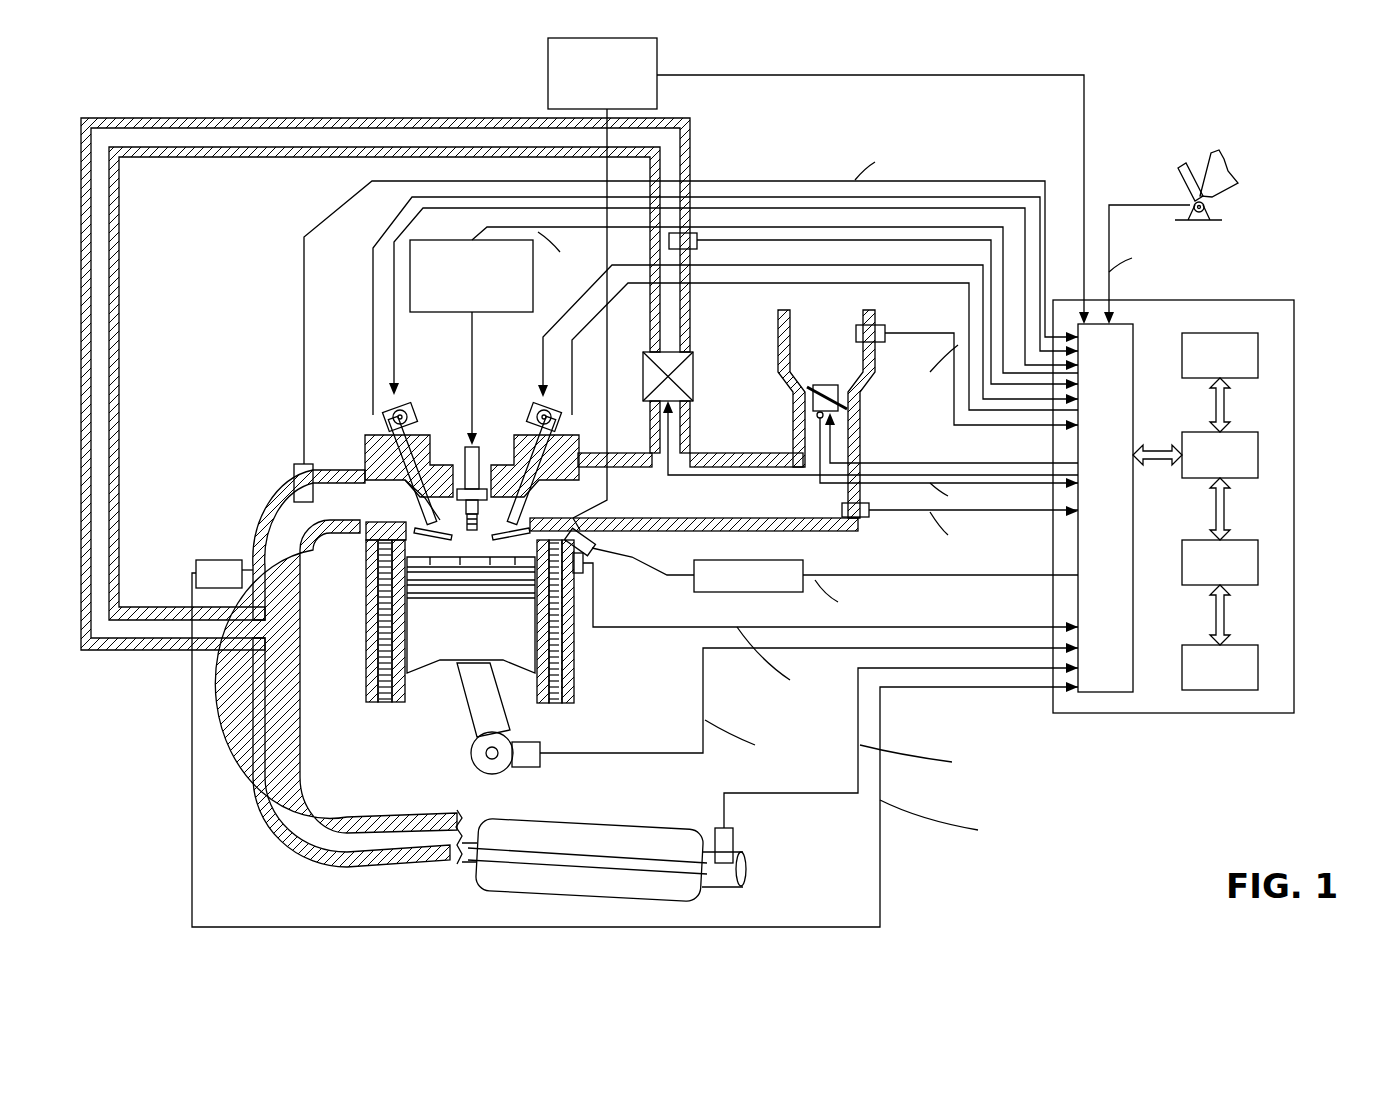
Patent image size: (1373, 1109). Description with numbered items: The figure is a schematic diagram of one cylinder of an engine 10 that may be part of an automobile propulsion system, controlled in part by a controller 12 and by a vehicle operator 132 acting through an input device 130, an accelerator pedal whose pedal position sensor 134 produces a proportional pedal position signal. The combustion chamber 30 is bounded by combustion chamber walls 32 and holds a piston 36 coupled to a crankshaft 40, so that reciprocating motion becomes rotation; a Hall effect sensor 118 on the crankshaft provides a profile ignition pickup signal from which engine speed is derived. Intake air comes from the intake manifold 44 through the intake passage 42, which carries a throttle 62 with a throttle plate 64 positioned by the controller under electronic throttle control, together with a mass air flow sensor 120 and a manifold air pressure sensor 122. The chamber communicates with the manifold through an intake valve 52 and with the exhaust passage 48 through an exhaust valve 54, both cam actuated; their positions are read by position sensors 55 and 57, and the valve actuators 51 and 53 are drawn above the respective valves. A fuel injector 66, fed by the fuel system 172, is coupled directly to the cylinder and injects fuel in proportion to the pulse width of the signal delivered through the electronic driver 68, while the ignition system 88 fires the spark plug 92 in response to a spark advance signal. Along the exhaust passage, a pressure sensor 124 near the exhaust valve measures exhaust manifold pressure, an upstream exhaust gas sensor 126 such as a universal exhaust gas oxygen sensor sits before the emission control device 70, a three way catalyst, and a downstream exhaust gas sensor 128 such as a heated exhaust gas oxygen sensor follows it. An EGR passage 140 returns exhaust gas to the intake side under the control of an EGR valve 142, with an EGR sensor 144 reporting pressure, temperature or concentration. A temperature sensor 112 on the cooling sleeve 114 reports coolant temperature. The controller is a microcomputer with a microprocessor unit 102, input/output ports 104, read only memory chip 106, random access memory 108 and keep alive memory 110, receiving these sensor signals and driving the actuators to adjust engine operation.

The engine 10 is at (243, 283).
The controller 12 is at (1280, 300).
The combustion chamber 30 is at (372, 660).
The combustion chamber walls 32 is at (400, 702).
The piston 36 is at (455, 655).
The crankshaft 40 is at (478, 770).
The intake passage 42 is at (826, 414).
The intake manifold 44 is at (694, 492).
The exhaust passage 48 is at (338, 668).
The intake valve actuator 51 is at (520, 400).
The intake valve 52 is at (548, 503).
The exhaust valve actuator 53 is at (420, 400).
The exhaust valve 54 is at (420, 498).
The position sensor 55 is at (556, 418).
The position sensor 57 is at (384, 412).
The throttle 62 is at (840, 398).
The throttle plate 64 is at (805, 392).
The fuel injector 66 is at (590, 548).
The electronic driver 68 is at (720, 592).
The emission control device 70 is at (663, 826).
The ignition system 88 is at (418, 240).
The spark plug 92 is at (478, 440).
The microprocessor unit 102 is at (1258, 450).
The input/output ports 104 is at (1133, 332).
The read only memory chip 106 is at (1258, 352).
The random access memory 108 is at (1258, 558).
The keep alive memory 110 is at (1258, 663).
The temperature sensor 112 is at (588, 573).
The cooling sleeve 114 is at (558, 648).
The Hall effect sensor 118 is at (528, 768).
The mass air flow sensor 120 is at (880, 325).
The manifold air pressure sensor 122 is at (865, 520).
The pressure sensor 124 is at (294, 470).
The upstream exhaust gas sensor 126 is at (196, 565).
The downstream exhaust gas sensor 128 is at (740, 830).
The input device 130 is at (1178, 185).
The vehicle operator 132 is at (1232, 170).
The pedal position sensor 134 is at (1208, 212).
The EGR passage 140 is at (372, 118).
The EGR valve 142 is at (694, 382).
The EGR sensor 144 is at (690, 249).
The fuel system 172 is at (630, 38).